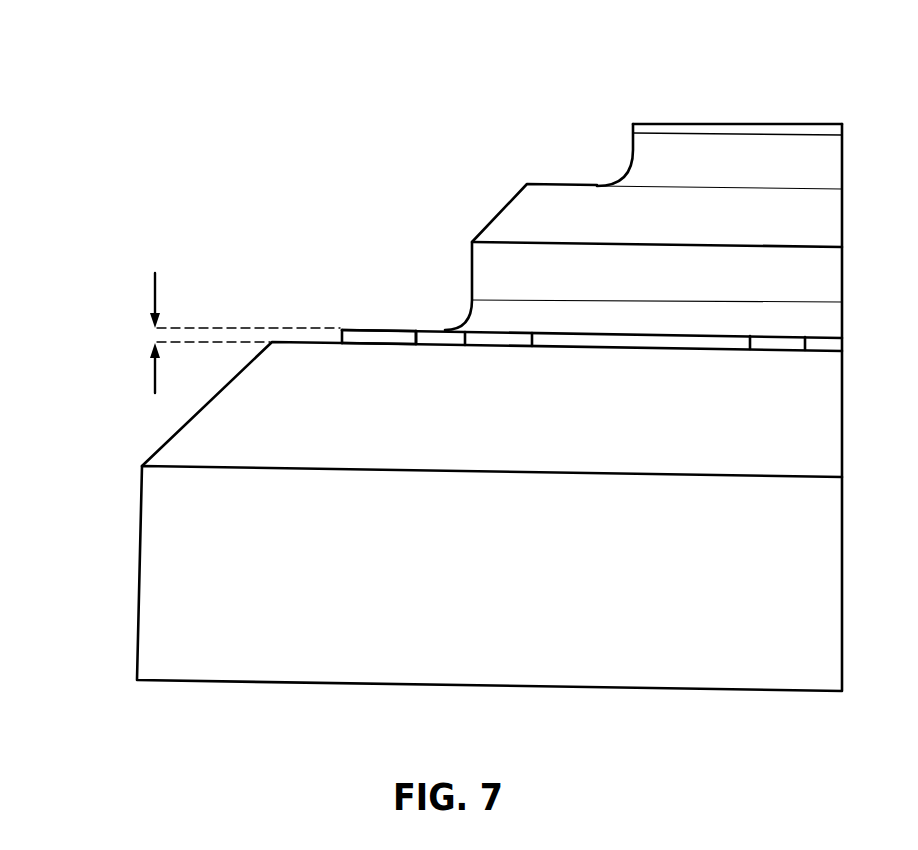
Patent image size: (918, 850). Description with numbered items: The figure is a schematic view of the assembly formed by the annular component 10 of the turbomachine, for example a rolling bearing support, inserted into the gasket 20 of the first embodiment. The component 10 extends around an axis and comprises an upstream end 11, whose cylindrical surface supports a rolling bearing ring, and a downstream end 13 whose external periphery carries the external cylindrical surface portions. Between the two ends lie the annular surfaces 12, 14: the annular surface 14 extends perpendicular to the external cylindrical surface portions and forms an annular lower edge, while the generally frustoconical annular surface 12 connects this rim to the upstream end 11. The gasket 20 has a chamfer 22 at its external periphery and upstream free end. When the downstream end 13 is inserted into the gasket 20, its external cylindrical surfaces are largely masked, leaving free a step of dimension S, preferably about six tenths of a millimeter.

The annular component 10 is at (485, 94).
The upstream end 11 is at (632, 127).
The annular surface 12 is at (497, 213).
The downstream end 13 is at (350, 329).
The annular surface 14 is at (378, 328).
The gasket 20 is at (108, 521).
The chamfer 22 is at (253, 392).
The step of dimension S is at (233, 333).